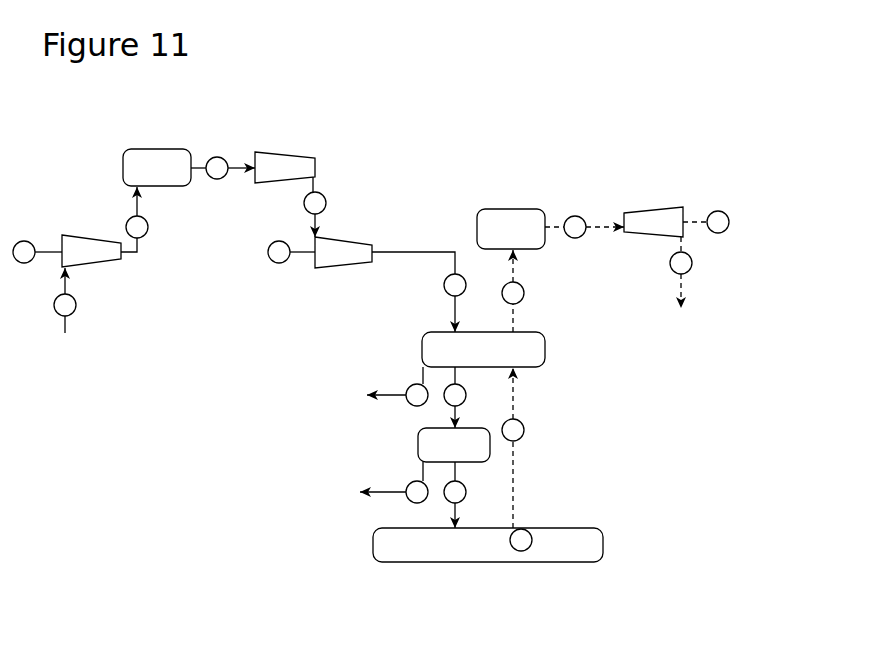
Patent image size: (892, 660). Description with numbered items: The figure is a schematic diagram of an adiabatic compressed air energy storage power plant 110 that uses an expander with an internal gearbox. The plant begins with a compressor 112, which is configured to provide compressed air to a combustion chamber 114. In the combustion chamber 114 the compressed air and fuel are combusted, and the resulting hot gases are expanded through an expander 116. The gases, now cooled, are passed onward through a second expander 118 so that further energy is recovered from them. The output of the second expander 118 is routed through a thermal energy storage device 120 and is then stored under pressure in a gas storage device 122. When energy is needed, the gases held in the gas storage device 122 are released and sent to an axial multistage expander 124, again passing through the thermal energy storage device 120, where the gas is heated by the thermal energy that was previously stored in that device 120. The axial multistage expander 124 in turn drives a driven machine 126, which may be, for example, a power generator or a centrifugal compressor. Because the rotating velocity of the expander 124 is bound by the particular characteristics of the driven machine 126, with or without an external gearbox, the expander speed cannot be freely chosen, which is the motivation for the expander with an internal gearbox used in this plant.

The adiabatic compressed air energy storage power plant 110 is at (434, 133).
The compressor 112 is at (90, 237).
The combustion chamber 114 is at (147, 149).
The expander 116 is at (270, 152).
The second expander 118 is at (333, 268).
The thermal energy storage device 120 is at (543, 352).
The gas storage device 122 is at (567, 562).
The axial multistage expander 124 is at (637, 212).
The power generator or centrifugal compressor 126 is at (715, 211).